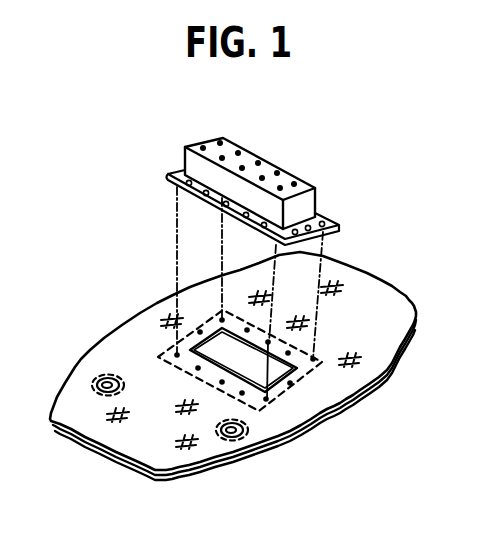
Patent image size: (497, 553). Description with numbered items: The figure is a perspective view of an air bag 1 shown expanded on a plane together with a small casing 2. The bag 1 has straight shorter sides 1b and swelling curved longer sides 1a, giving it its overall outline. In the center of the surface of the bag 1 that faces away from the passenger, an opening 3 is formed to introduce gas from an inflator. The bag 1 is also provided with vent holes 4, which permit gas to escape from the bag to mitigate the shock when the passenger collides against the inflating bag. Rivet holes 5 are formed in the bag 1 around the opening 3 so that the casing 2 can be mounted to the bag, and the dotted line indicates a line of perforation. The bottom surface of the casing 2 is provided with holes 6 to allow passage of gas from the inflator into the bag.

The air bag 1 is at (298, 441).
The swelling curved longer sides 1a is at (133, 322).
The straight shorter sides 1b is at (385, 282).
The small casing 2 is at (312, 171).
The opening 3 is at (224, 351).
The vent holes 4 is at (106, 379).
The rivet holes 5 is at (317, 356).
The holes 6 is at (203, 147).